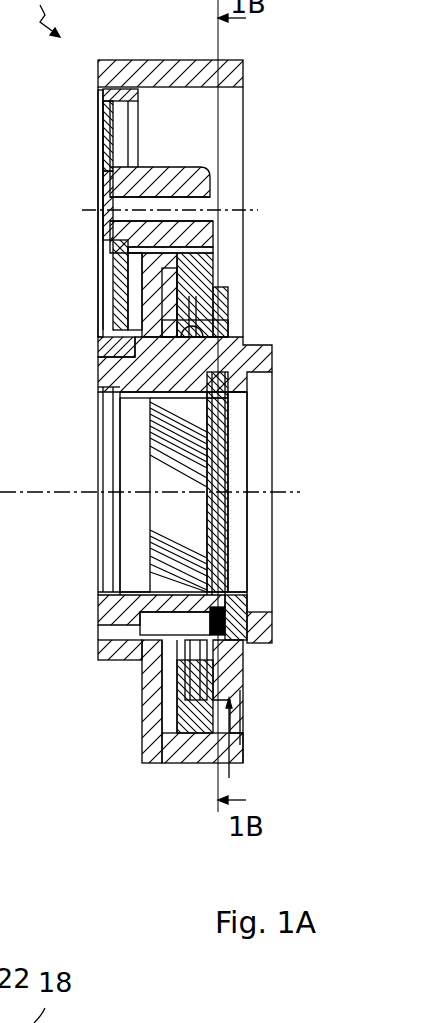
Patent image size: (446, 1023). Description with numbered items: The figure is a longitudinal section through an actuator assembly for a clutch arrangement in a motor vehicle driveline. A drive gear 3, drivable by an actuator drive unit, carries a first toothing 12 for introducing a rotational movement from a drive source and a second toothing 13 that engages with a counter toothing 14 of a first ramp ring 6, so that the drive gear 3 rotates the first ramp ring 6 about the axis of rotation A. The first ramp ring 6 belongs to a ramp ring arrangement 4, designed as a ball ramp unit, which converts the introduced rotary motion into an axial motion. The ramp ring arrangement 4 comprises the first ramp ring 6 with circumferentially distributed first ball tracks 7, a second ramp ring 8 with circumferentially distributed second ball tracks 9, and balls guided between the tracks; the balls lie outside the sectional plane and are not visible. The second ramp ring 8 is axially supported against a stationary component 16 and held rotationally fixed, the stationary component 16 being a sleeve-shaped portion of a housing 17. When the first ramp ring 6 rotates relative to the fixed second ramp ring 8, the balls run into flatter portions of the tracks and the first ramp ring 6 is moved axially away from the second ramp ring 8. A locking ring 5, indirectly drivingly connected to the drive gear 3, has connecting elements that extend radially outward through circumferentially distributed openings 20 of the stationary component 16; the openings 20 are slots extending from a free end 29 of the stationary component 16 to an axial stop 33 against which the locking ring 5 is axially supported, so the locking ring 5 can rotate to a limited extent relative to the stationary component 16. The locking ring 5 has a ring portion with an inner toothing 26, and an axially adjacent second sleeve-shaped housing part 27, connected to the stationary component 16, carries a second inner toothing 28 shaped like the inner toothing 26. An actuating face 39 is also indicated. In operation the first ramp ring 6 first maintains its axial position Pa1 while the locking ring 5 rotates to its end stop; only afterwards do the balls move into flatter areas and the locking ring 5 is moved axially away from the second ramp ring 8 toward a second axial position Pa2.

The drive gear 3 is at (108, 165).
The ramp ring arrangement 4 is at (228, 249).
The locking ring 5 is at (224, 532).
The first ramp ring 6 is at (222, 302).
The first ball track 7 is at (208, 332).
The second ramp ring 8 is at (183, 650).
The second ball track 9 is at (148, 705).
The first toothing 12 is at (118, 86).
The second toothing 13 is at (215, 263).
The counter toothing 14 is at (172, 736).
The stationary component 16 is at (110, 350).
The housing 17 is at (157, 54).
The opening 20 is at (183, 622).
The inner toothing 26 is at (228, 440).
The second sleeve-shaped housing part 27 is at (112, 614).
The second inner toothing 28 is at (146, 558).
The free end 29 is at (97, 334).
The axial stop 33 is at (240, 599).
The actuating face 39 is at (232, 686).
The axis of rotation A is at (272, 494).
The first axial position Pa1 is at (229, 778).
The second axial position Pa2 is at (243, 733).